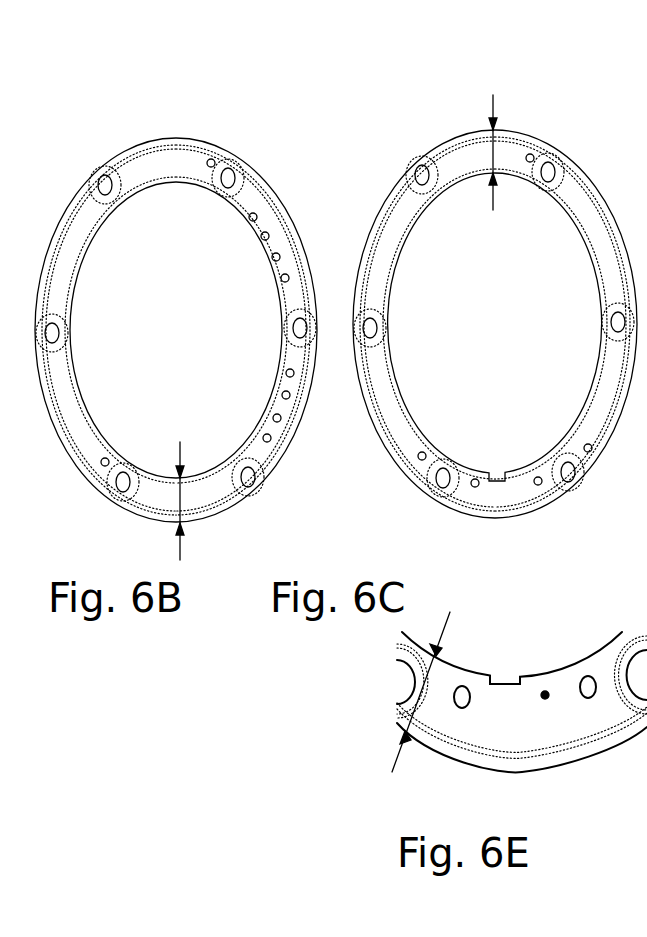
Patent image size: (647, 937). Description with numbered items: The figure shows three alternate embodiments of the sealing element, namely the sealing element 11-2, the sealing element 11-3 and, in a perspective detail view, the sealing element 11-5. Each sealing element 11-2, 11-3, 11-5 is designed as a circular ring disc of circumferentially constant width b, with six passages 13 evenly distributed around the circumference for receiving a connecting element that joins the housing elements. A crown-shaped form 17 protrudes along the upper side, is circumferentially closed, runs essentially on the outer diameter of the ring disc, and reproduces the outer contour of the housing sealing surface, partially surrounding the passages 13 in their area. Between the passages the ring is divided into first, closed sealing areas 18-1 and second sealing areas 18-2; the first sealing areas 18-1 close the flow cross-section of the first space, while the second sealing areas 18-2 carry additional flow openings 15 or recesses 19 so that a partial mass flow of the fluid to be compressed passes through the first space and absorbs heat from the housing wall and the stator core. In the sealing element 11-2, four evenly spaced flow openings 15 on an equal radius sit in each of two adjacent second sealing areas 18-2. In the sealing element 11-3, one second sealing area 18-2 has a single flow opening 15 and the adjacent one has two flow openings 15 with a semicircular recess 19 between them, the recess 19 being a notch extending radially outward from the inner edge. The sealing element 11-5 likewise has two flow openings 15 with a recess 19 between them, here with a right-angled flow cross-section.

In FIG. 6B, the sealing element 11-2 is at (196, 124).
In FIG. 6C, the sealing element 11-3 is at (551, 123).
In FIG. 6E, the sealing element 11-5 is at (546, 693).
In FIG. 6B, the passages 13 is at (103, 180).
In FIG. 6C, the passages 13 is at (422, 173).
In FIG. 6E, the passages 13 is at (403, 680).
In FIG. 6B, the flow openings 15 is at (278, 256).
In FIG. 6C, the flow openings 15 is at (536, 484).
In FIG. 6E, the flow openings 15 is at (462, 705).
In FIG. 6B, the form 17 is at (167, 140).
In FIG. 6C, the form 17 is at (463, 140).
In FIG. 6E, the form 17 is at (570, 732).
In FIG. 6B, the first sealing area 18-1 is at (70, 232).
In FIG. 6C, the first sealing area 18-1 is at (393, 232).
In FIG. 6B, the second sealing area 18-2 is at (252, 202).
In FIG. 6C, the second sealing area 18-2 is at (607, 370).
In FIG. 6E, the second sealing area 18-2 is at (505, 718).
In FIG. 6C, the recess 19 is at (497, 476).
In FIG. 6E, the recess 19 is at (508, 684).